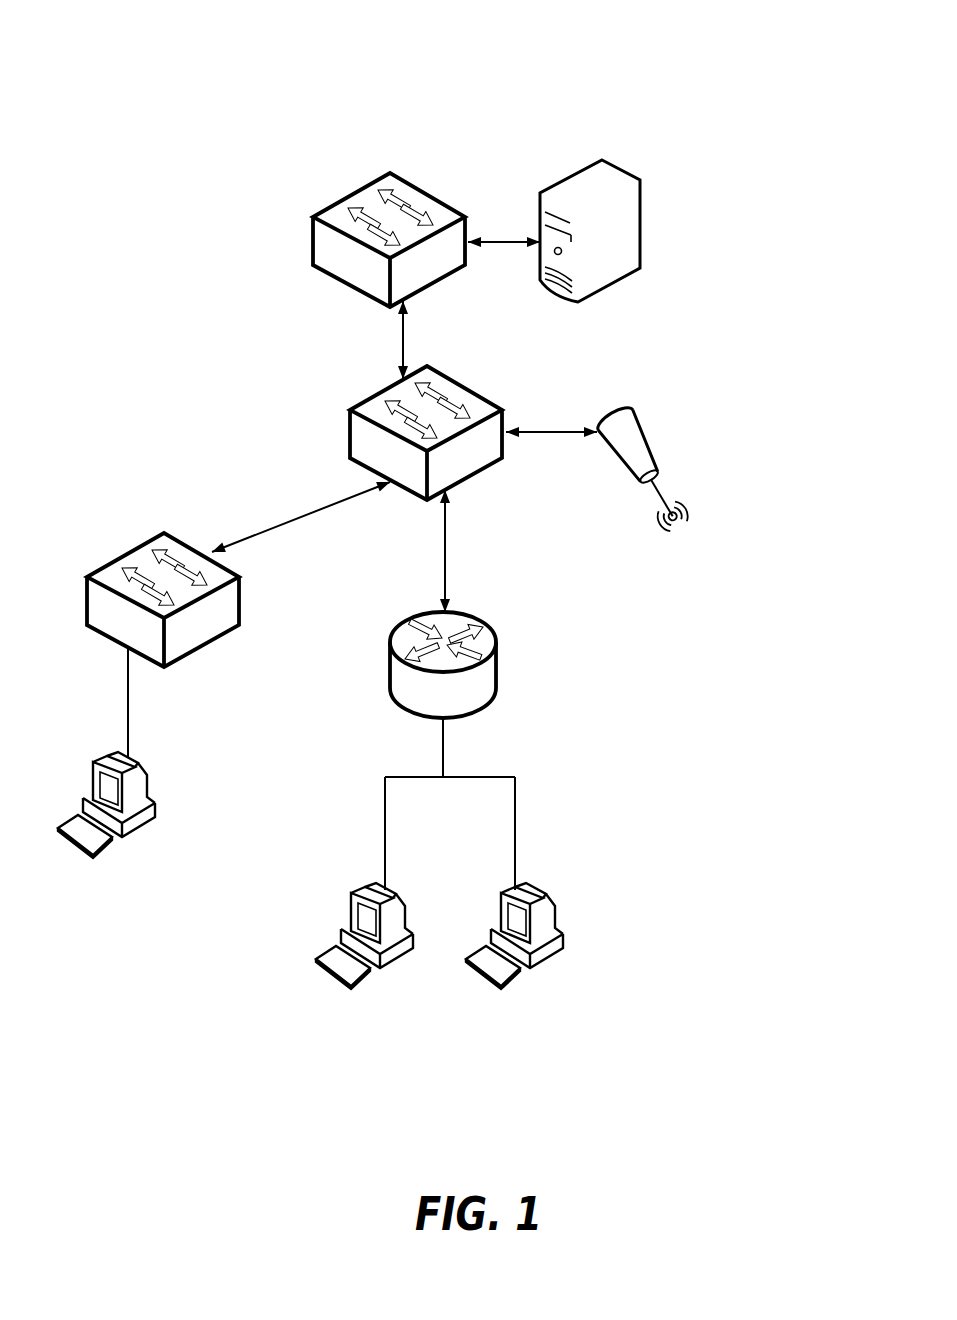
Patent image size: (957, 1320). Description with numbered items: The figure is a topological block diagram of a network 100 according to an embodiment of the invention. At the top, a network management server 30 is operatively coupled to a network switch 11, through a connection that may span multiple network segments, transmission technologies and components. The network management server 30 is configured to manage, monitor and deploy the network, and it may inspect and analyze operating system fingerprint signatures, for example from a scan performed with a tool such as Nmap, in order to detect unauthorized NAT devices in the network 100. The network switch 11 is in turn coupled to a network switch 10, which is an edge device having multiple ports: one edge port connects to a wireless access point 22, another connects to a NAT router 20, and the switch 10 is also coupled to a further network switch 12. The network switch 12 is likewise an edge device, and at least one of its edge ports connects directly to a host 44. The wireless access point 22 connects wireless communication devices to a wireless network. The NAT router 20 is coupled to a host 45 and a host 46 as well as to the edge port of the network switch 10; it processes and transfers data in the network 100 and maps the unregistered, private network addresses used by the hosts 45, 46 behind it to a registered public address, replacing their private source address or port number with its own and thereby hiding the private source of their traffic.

The network 100 is at (766, 50).
The network switch 10 is at (401, 464).
The network switch 11 is at (361, 266).
The network switch 12 is at (136, 630).
The NAT router 20 is at (456, 708).
The wireless access point 22 is at (660, 449).
The network management server 30 is at (612, 200).
The host 44 is at (145, 770).
The host 45 is at (398, 900).
The host 46 is at (549, 900).